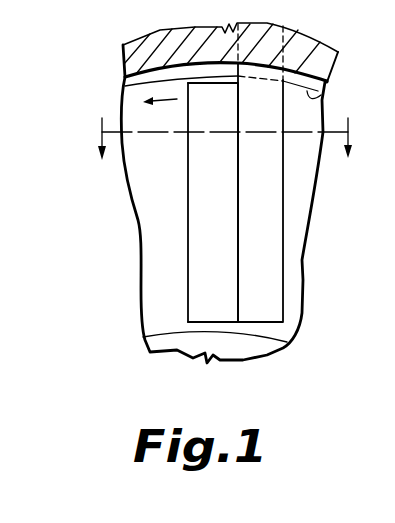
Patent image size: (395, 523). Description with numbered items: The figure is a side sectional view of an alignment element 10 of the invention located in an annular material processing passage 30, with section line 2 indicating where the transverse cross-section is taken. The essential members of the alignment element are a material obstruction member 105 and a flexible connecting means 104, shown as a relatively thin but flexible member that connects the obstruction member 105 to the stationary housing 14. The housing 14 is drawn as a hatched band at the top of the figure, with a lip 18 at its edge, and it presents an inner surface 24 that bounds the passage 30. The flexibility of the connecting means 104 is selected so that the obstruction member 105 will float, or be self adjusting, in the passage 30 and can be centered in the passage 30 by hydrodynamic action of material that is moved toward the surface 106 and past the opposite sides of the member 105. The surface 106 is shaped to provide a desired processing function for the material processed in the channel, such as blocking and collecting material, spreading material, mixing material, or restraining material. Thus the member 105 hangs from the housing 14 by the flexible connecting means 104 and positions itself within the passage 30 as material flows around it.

The apparatus 10 is at (388, 258).
The stationary housing 14 is at (307, 57).
The retaining lip 18 is at (324, 98).
The surface 24 is at (125, 85).
The passage 30 is at (158, 252).
The flexible connecting means 104 is at (268, 167).
The material obstruction member 105 is at (202, 165).
The surface 106 is at (188, 212).
The section line 2- 2 is at (226, 123).